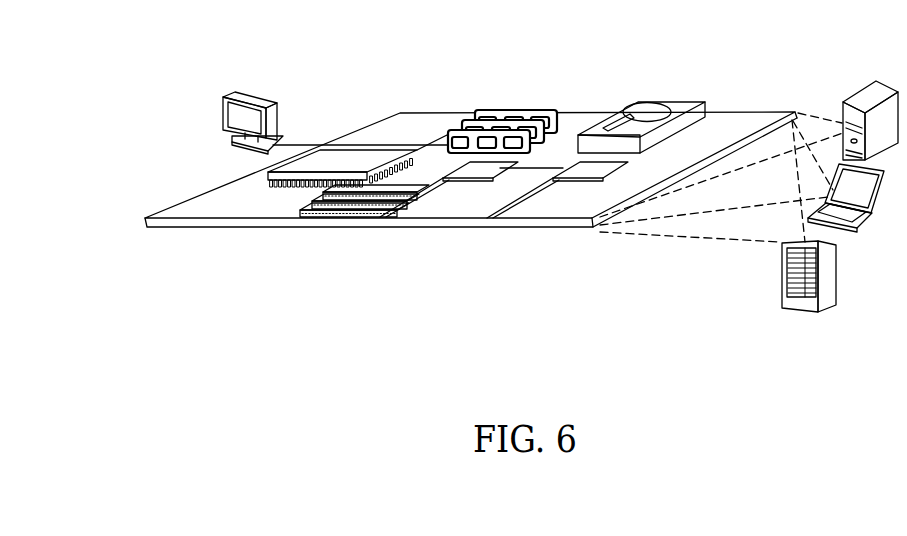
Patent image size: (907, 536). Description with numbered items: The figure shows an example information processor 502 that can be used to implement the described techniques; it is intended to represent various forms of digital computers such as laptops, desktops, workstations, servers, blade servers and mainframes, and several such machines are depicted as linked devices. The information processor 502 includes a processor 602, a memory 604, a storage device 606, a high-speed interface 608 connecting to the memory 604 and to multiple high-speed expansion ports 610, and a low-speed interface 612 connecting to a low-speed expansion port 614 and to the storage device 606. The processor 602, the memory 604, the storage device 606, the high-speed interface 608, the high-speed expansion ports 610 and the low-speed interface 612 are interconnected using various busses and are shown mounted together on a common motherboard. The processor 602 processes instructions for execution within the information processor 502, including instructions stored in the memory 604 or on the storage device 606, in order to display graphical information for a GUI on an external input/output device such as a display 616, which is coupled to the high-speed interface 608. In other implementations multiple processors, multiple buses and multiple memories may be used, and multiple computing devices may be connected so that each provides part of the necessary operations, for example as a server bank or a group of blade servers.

The information processor 502 is at (850, 93).
The processor 602 is at (272, 175).
The memory 604 is at (490, 99).
The storage device 606 is at (663, 102).
The high-speed interface 608 is at (477, 167).
The high-speed expansion ports 610 is at (313, 205).
The low-speed interface 612 is at (592, 158).
The low-speed expansion port 614 is at (492, 220).
The display 616 is at (252, 93).